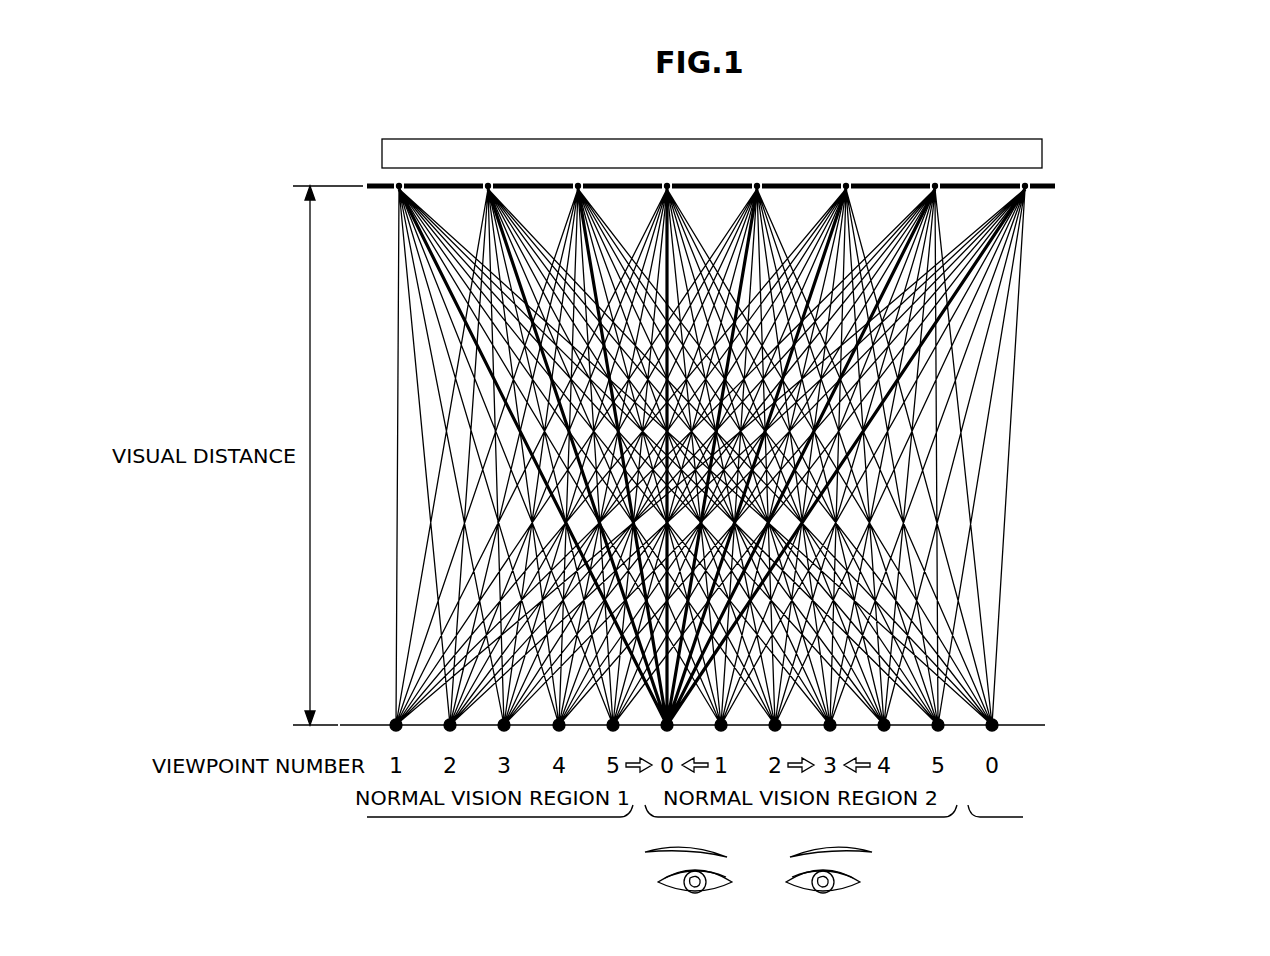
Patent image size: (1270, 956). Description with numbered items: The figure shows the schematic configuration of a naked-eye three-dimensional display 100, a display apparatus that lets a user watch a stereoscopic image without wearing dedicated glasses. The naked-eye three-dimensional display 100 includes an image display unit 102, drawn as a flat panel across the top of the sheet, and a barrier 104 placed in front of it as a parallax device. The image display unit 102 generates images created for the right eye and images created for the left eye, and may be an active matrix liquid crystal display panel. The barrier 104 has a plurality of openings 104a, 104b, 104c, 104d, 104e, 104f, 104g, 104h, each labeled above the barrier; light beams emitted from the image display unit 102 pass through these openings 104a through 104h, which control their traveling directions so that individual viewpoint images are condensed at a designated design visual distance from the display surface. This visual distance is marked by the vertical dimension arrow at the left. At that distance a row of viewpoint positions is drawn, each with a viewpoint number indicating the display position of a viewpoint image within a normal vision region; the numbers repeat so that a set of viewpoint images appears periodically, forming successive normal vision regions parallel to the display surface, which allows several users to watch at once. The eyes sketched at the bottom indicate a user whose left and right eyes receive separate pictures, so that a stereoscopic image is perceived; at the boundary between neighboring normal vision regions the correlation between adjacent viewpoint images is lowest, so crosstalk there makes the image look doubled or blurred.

The naked-eye 3-D display 100 is at (801, 165).
The image display unit 102 is at (1042, 154).
The barrier 104 is at (1064, 190).
The opening 104a is at (399, 175).
The opening 104b is at (488, 175).
The opening 104c is at (578, 175).
The opening 104d is at (667, 175).
The opening 104e is at (757, 175).
The opening 104f is at (846, 175).
The opening 104g is at (935, 175).
The opening 104h is at (1025, 175).